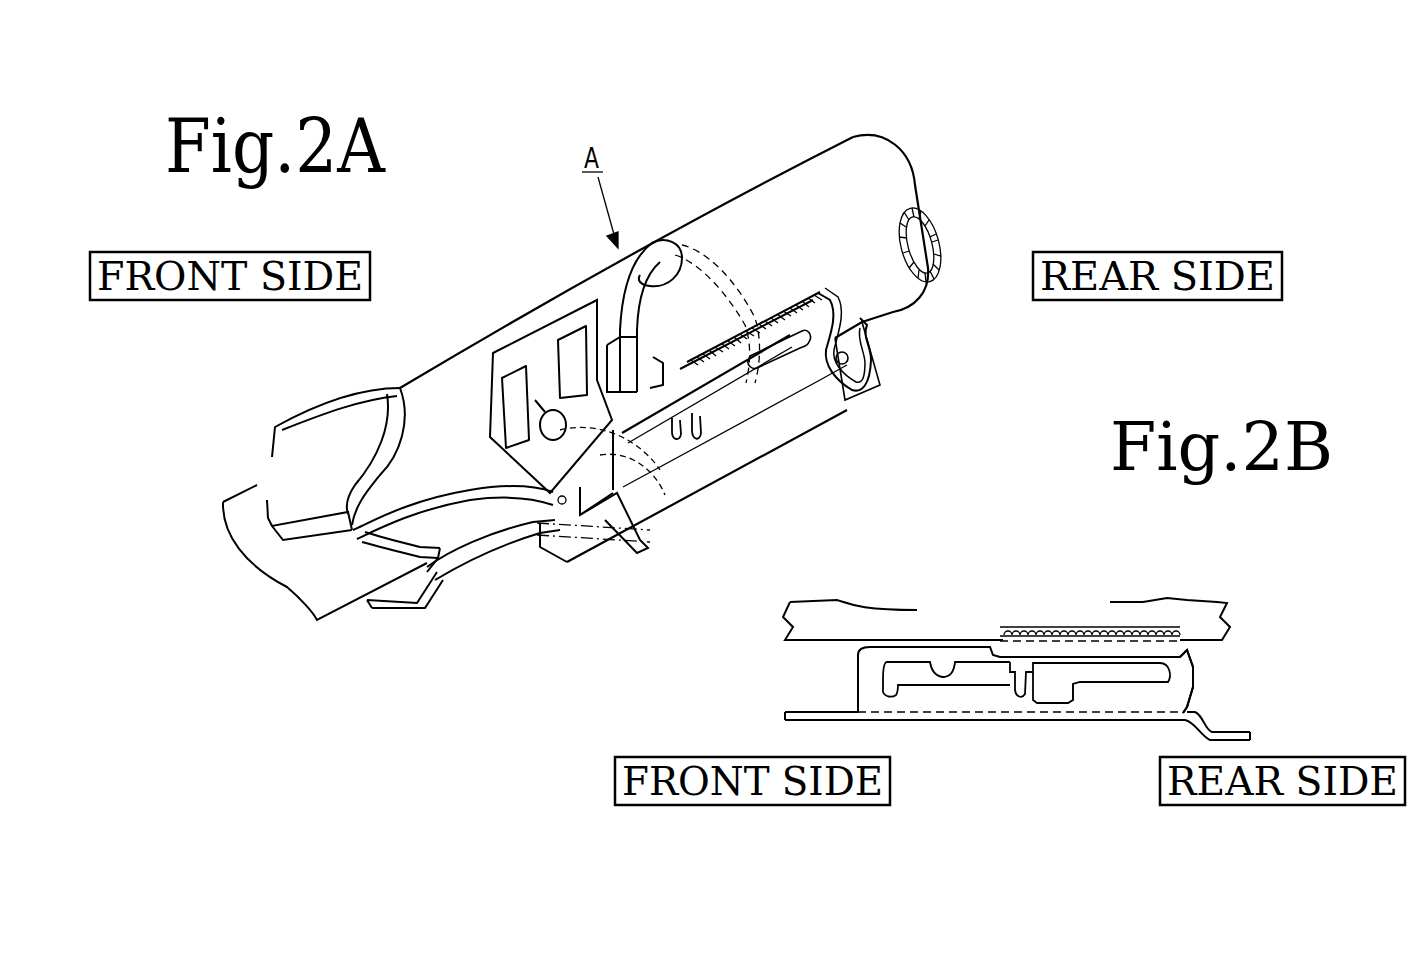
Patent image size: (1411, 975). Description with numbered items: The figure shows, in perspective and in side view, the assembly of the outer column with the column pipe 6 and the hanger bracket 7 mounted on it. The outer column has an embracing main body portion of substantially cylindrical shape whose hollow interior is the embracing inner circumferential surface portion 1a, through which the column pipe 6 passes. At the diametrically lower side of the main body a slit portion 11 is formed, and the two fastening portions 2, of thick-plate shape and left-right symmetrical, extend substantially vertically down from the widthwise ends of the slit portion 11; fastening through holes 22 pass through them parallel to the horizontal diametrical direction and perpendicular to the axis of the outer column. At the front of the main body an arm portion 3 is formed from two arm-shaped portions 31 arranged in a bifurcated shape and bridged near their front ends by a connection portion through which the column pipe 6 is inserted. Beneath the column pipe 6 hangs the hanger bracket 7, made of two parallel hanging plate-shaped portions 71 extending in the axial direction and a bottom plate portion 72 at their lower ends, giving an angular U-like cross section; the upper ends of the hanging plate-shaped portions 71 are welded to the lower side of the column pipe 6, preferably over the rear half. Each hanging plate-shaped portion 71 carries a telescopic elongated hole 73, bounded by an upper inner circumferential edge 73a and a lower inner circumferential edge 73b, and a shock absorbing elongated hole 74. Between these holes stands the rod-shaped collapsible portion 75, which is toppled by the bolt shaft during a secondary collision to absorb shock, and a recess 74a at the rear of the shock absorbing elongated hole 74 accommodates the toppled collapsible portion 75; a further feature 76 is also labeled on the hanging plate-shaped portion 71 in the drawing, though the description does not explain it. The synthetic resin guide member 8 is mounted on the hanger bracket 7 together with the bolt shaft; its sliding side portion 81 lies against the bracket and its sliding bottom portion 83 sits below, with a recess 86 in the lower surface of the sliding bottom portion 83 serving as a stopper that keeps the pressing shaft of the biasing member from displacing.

In FIG. 2A, the embracing inner circumferential surface portion 1a is at (680, 270).
In FIG. 2A, the fastening portion 2 is at (450, 512).
In FIG. 2A, the arm portion 3 is at (265, 448).
In FIG. 2A, the column pipe 6 is at (833, 148).
In FIG. 2B, the column pipe 6 is at (1210, 600).
In FIG. 2A, the hanger bracket 7 is at (830, 433).
In FIG. 2B, the hanger bracket 7 is at (1104, 732).
In FIG. 2A, the guide member 8 is at (628, 563).
In FIG. 2A, the slit portion 11 is at (526, 512).
In FIG. 2A, the fastening through hole 22 is at (551, 425).
In FIG. 2A, the arm-shaped portion 31 is at (303, 537).
In FIG. 2A, the hanging plate-shaped portion 71 is at (837, 343).
In FIG. 2B, the hanging plate-shaped portion 71 is at (1188, 677).
In FIG. 2A, the bottom plate portion 72 is at (843, 393).
In FIG. 2B, the bottom plate portion 72 is at (1138, 721).
In FIG. 2A, the telescopic elongated hole 73 is at (645, 445).
In FIG. 2B, the telescopic elongated hole 73 is at (916, 673).
In FIG. 2B, the upper inner circumferential edge 73a is at (952, 664).
In FIG. 2B, the lower inner circumferential edge 73b is at (978, 683).
In FIG. 2A, the shock absorbing elongated hole 74 is at (787, 353).
In FIG. 2B, the shock absorbing elongated hole 74 is at (1147, 673).
In FIG. 2B, the recess 74a is at (1060, 698).
In FIG. 2A, the collapsible portion 75 is at (687, 420).
In FIG. 2B, the collapsible portion 75 is at (1033, 680).
In FIG. 2A, the hole 76 is at (840, 365).
In FIG. 2A, the sliding side portion 81 is at (574, 500).
In FIG. 2A, the sliding bottom portion 83 is at (655, 488).
In FIG. 2A, the recess 86 is at (658, 556).